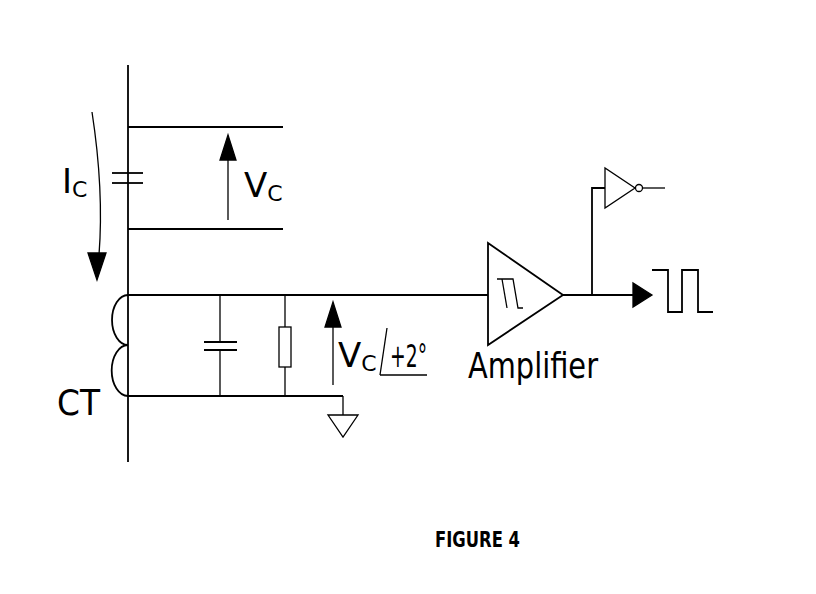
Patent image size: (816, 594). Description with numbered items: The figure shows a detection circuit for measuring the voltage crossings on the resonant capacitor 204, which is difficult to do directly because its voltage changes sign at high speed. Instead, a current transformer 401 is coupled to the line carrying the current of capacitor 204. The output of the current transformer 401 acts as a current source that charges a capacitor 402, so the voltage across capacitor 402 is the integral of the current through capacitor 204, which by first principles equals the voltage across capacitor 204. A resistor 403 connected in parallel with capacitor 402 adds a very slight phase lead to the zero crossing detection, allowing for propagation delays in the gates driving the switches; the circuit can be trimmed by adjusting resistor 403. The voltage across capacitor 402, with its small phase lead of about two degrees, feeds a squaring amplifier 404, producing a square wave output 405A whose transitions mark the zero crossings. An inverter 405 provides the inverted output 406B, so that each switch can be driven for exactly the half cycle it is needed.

The capacitor 204 is at (156, 179).
The current transformer 401 is at (91, 345).
The capacitor 402 is at (220, 371).
The resistor 403 is at (280, 402).
The squaring amplifier 404 is at (525, 271).
The inverter 405 is at (620, 166).
The square wave output 405A is at (717, 289).
The inverted output 406B is at (693, 184).